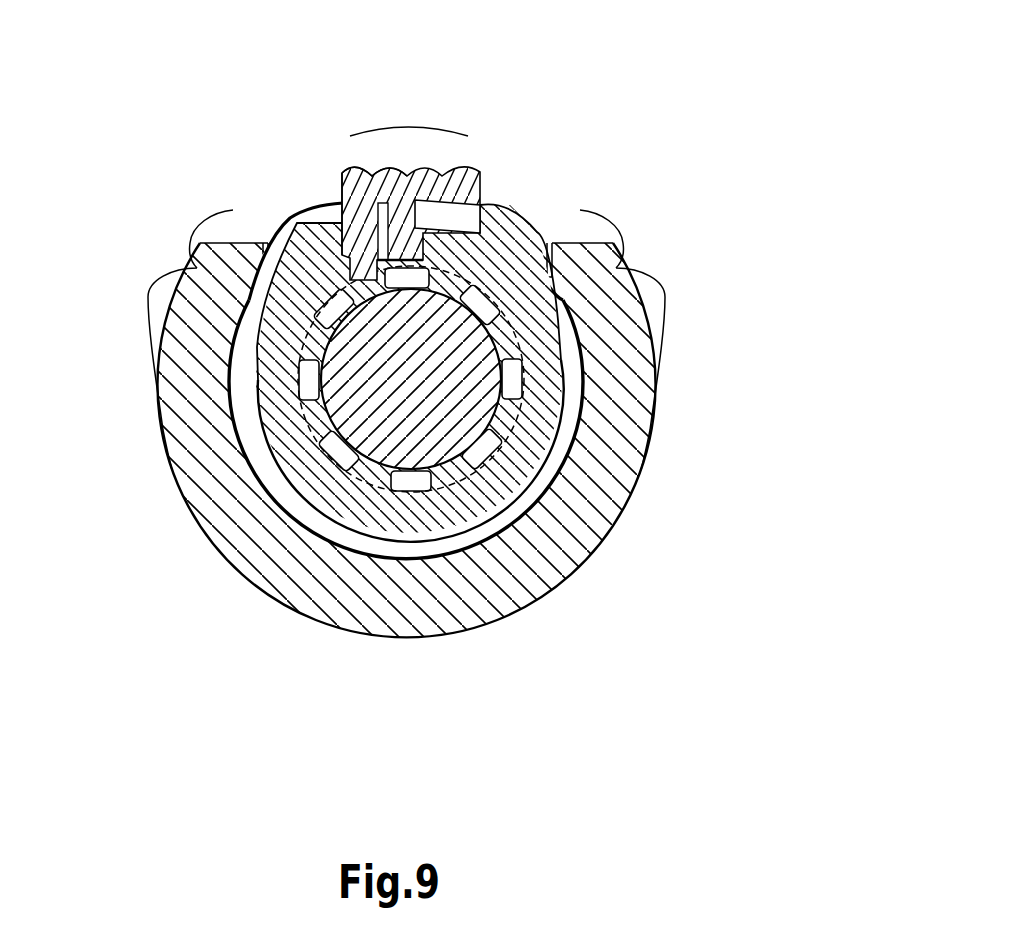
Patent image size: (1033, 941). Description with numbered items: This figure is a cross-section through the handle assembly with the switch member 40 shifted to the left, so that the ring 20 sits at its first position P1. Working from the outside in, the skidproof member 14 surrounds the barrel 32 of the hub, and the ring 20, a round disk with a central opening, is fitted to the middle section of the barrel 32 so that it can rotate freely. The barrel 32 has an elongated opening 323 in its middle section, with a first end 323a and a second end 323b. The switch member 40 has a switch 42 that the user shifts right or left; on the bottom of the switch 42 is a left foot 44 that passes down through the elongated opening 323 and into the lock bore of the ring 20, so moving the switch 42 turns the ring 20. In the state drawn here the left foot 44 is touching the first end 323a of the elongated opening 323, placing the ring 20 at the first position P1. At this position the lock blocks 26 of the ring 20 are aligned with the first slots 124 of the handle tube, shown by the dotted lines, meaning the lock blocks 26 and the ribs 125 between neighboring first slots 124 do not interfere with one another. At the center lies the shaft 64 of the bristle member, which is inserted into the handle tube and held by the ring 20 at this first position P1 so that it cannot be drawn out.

The skidproof member 14 is at (498, 638).
The ring 20 is at (545, 310).
The lock blocks 26 is at (347, 458).
The barrel 32 is at (573, 410).
The switch member 40 is at (335, 152).
The switch 42 is at (397, 165).
The left foot 44 is at (342, 207).
The shaft 64 is at (440, 442).
The first slots 124 is at (378, 485).
The ribs 125 is at (310, 383).
The elongated opening 323 is at (397, 142).
The first end 323a is at (342, 226).
The second end 323b is at (537, 232).
The first position P1 is at (245, 355).